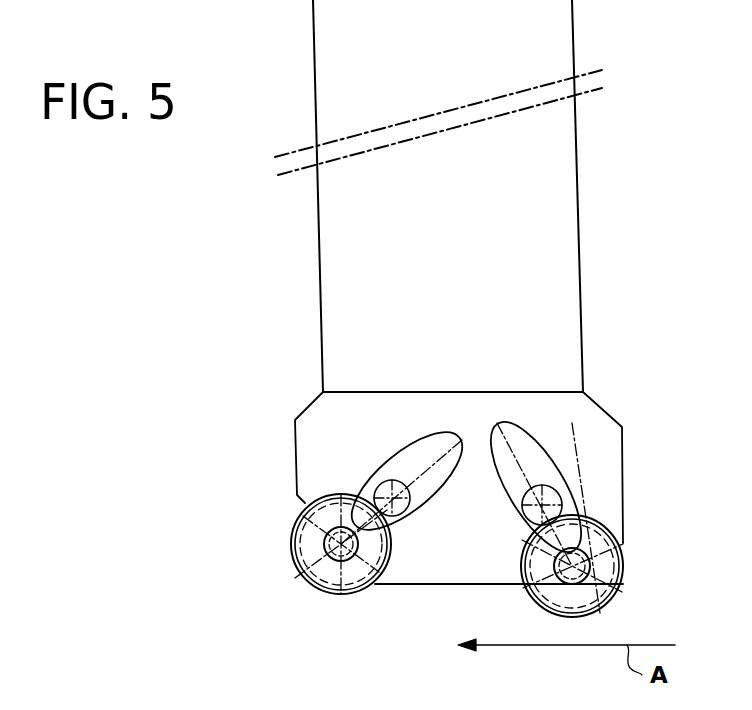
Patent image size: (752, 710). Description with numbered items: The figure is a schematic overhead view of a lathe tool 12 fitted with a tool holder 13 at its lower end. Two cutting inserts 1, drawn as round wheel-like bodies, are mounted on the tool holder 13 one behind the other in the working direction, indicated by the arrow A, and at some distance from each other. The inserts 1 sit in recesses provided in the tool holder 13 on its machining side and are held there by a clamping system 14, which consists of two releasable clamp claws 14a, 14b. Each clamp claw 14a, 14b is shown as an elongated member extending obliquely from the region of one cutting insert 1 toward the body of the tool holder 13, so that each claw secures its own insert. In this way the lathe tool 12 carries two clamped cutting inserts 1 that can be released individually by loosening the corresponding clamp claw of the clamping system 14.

The cutting insert 1 is at (337, 597).
The lathe tool 12 is at (563, 295).
The tool holder 13 is at (603, 407).
The clamping system 14 is at (463, 420).
The clamp claw 14a is at (407, 458).
The clamp claw 14b is at (560, 463).